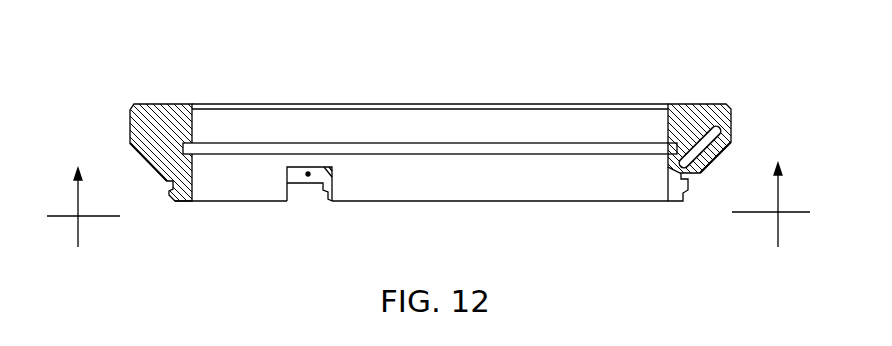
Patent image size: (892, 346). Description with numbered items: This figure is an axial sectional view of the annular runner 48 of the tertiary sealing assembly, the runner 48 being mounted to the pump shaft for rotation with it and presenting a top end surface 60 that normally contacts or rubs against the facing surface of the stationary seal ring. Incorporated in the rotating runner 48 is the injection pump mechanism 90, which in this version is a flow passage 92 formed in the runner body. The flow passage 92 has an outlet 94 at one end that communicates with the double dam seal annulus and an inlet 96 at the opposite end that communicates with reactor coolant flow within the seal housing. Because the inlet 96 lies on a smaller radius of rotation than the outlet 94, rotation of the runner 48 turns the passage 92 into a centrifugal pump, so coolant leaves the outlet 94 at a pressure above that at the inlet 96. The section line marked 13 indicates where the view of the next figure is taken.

The top end surface 60 is at (157, 104).
The annular runner 48 is at (158, 156).
The injection pump mechanism 90 is at (715, 150).
The outlet 94 is at (708, 104).
The flow passage 92 is at (701, 176).
The inlet 96 is at (308, 176).
The section line 13- 13 is at (432, 206).